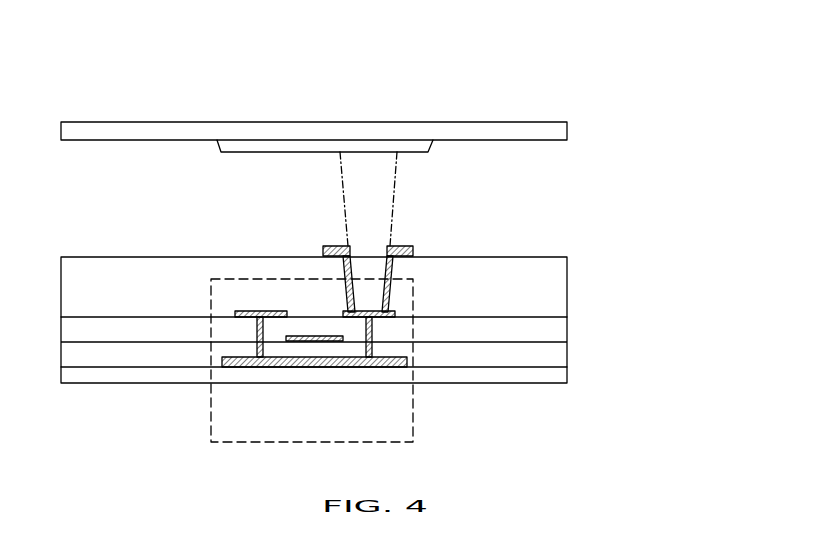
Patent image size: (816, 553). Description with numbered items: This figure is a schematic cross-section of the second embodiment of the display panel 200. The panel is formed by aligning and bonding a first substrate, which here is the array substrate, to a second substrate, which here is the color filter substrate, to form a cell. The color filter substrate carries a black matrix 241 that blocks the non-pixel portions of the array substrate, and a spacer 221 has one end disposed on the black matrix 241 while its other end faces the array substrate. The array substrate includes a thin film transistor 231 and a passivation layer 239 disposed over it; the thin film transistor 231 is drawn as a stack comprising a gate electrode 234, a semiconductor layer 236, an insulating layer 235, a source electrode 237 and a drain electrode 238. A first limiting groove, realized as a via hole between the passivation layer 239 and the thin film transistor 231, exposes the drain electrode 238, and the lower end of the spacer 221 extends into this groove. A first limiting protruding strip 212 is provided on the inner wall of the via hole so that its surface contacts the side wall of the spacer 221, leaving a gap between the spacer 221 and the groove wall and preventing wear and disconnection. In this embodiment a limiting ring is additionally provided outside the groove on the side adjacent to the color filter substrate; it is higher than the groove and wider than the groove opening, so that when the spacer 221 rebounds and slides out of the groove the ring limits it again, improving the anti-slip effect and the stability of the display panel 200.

The display panel 200 is at (123, 52).
The black matrix 241 is at (420, 143).
The spacer 221 is at (368, 199).
The first limiting protruding strip 212 is at (347, 292).
The passivation layer 239 is at (548, 275).
The insulating layer 235 is at (548, 332).
The thin film transistor 231 is at (413, 367).
The source electrode 237 is at (252, 367).
The gate electrode 234 is at (307, 341).
The semiconductor layer 236 is at (332, 367).
The drain electrode 238 is at (367, 367).